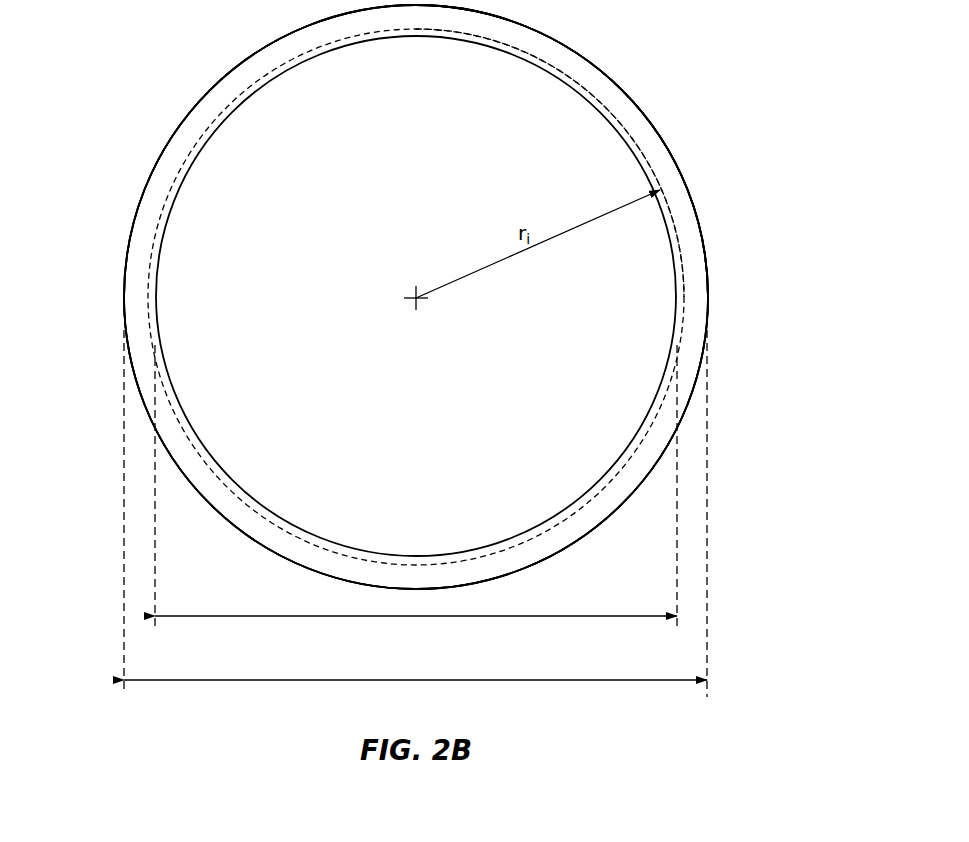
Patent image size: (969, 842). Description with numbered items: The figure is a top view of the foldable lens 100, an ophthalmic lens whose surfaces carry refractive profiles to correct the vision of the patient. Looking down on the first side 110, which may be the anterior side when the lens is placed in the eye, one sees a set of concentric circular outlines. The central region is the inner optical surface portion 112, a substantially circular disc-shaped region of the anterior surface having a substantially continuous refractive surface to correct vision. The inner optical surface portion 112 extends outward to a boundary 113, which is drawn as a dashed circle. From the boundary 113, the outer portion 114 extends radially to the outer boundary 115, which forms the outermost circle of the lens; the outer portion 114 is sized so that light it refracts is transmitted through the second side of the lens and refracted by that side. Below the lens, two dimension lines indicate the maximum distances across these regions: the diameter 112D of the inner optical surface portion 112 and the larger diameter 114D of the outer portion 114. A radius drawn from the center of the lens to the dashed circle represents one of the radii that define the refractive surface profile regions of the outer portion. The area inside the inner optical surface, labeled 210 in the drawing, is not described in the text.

The foldable lens 100 is at (203, 52).
The first side 110 is at (143, 148).
The inner optical surface portion 112 is at (613, 178).
The boundary 113 is at (672, 242).
The outer portion 114 is at (635, 122).
The outer boundary 115 is at (708, 290).
The interior cavity 210 is at (385, 437).
The diameter 112D is at (217, 616).
The diameter 114D is at (227, 680).